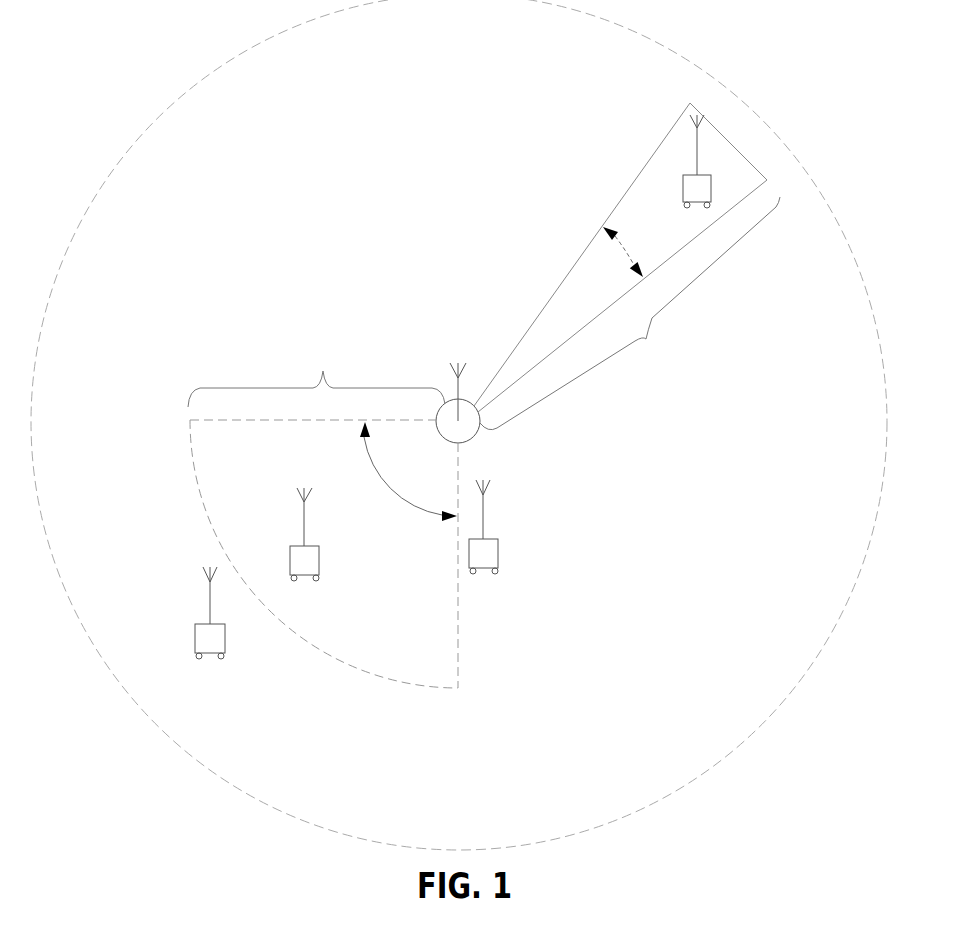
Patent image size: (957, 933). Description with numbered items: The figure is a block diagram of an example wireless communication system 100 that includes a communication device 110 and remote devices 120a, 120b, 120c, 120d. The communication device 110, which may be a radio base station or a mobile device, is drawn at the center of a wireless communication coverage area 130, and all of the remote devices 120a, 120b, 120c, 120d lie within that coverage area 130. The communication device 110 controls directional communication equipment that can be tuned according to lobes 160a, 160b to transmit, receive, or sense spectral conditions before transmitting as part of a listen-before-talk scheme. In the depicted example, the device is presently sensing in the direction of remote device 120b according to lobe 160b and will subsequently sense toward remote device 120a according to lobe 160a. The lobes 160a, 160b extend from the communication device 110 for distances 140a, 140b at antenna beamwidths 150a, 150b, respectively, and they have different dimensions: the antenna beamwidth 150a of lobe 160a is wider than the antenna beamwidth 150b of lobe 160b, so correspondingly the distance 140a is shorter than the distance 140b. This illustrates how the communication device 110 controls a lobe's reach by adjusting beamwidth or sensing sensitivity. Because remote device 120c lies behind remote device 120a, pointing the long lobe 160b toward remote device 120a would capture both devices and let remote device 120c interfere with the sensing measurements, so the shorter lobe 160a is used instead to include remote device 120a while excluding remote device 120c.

The wireless communication system 100 is at (812, 98).
The communication device 110 is at (469, 444).
The remote device 120a is at (320, 563).
The remote device 120b is at (730, 174).
The remote device 120c is at (223, 642).
The remote device 120d is at (498, 556).
The wireless communication coverage area 130 is at (162, 112).
The distance 140a is at (316, 372).
The distance 140b is at (630, 313).
The antenna beamwidth 150a is at (388, 482).
The antenna beamwidth 150b is at (631, 247).
The lobe 160a is at (211, 506).
The lobe 160b is at (545, 302).